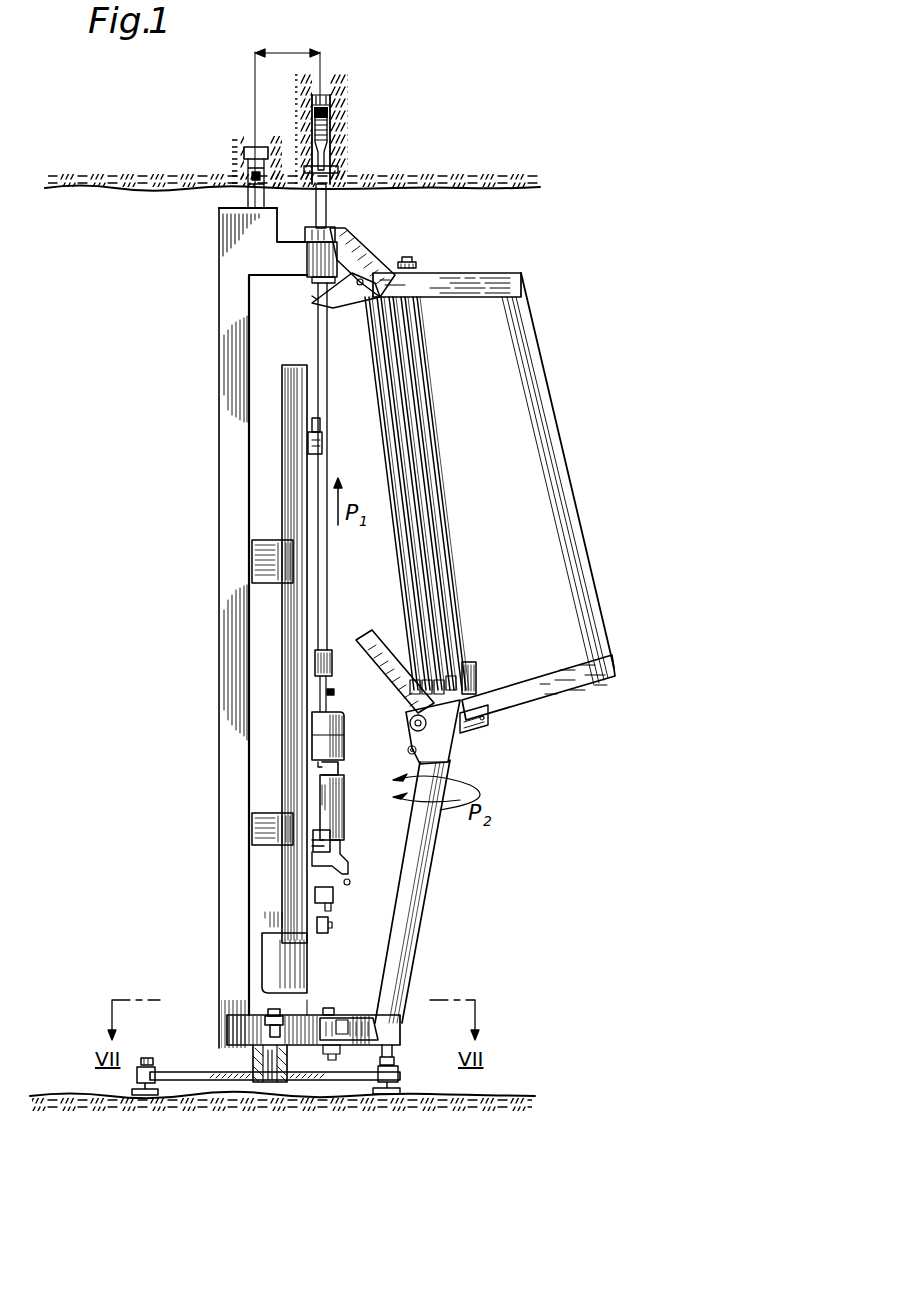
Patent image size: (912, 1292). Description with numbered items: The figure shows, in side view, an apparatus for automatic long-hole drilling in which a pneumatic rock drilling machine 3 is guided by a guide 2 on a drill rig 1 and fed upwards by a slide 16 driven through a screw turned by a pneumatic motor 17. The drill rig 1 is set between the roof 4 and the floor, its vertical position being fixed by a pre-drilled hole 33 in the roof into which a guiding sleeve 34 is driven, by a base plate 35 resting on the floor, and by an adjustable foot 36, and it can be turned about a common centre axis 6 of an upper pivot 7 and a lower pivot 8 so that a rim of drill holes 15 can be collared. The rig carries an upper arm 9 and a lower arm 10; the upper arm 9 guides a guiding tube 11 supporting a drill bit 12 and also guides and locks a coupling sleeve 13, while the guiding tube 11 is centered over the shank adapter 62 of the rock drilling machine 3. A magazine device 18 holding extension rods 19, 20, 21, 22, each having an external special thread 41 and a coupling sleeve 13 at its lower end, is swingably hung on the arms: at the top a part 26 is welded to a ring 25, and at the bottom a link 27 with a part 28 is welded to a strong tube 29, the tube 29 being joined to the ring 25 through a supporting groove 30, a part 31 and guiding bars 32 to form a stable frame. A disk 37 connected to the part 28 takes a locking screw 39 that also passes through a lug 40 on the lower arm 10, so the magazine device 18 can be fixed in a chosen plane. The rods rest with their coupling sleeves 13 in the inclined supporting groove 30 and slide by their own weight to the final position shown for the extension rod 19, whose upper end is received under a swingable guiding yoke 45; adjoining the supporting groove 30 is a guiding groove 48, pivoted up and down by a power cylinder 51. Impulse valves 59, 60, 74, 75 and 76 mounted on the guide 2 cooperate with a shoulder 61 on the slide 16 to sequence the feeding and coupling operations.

The drill rig 1 is at (220, 418).
The guide 2 is at (288, 493).
The rock drilling machine 3 is at (340, 741).
The roof 4 is at (118, 190).
The common centre axis 6 is at (254, 90).
The upper pivot 7 is at (226, 210).
The lower pivot 8 is at (260, 1082).
The upper arm 9 is at (308, 277).
The lower arm 10 is at (310, 1029).
The guiding tube 11 is at (336, 167).
The drill bit 12 is at (323, 113).
The coupling sleeve 13 is at (330, 668).
The drill holes 15 is at (328, 135).
The slide 16 is at (338, 769).
The pneumatic motor 17 is at (270, 966).
The magazine device 18 is at (560, 478).
The extension rod 19 is at (402, 548).
The extension rod 20 is at (406, 576).
The extension rod 21 is at (412, 602).
The extension rod 22 is at (422, 493).
The ring 25 is at (326, 232).
The part 26 is at (360, 250).
The link 27 is at (335, 1011).
The part 28 is at (374, 1031).
The tube 29 is at (429, 880).
The supporting groove 30 is at (539, 704).
The part 31 is at (557, 414).
The guiding bars 32 is at (460, 271).
The pre-drilled hole 33 is at (248, 148).
The guiding sleeve 34 is at (246, 170).
The base plate 35 is at (186, 1082).
The adjustable foot 36 is at (146, 1058).
The disk 37 is at (268, 1012).
The locking screw 39 is at (266, 1020).
The lug 40 is at (270, 1036).
The external special thread 41 is at (412, 266).
The guiding yoke 45 is at (312, 312).
The guiding groove 48 is at (372, 638).
The power cylinder 51 is at (473, 736).
The impulse valve 59 is at (322, 447).
The impulse valve 60 is at (332, 925).
The shoulder 61 is at (337, 840).
The shank adapter 62 is at (334, 694).
The impulse valve 74 is at (320, 424).
The impulse valve 75 is at (314, 893).
The impulse valve 76 is at (318, 847).